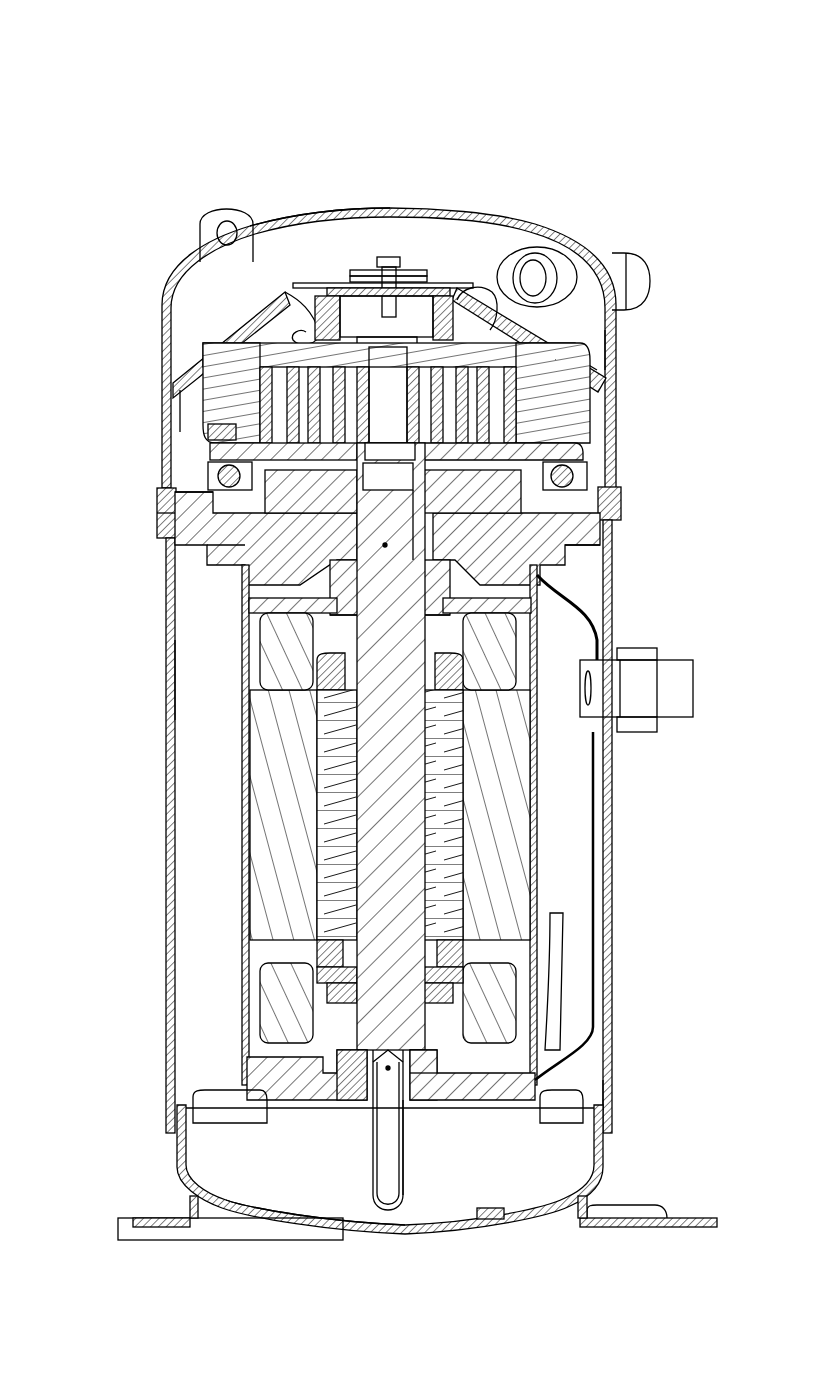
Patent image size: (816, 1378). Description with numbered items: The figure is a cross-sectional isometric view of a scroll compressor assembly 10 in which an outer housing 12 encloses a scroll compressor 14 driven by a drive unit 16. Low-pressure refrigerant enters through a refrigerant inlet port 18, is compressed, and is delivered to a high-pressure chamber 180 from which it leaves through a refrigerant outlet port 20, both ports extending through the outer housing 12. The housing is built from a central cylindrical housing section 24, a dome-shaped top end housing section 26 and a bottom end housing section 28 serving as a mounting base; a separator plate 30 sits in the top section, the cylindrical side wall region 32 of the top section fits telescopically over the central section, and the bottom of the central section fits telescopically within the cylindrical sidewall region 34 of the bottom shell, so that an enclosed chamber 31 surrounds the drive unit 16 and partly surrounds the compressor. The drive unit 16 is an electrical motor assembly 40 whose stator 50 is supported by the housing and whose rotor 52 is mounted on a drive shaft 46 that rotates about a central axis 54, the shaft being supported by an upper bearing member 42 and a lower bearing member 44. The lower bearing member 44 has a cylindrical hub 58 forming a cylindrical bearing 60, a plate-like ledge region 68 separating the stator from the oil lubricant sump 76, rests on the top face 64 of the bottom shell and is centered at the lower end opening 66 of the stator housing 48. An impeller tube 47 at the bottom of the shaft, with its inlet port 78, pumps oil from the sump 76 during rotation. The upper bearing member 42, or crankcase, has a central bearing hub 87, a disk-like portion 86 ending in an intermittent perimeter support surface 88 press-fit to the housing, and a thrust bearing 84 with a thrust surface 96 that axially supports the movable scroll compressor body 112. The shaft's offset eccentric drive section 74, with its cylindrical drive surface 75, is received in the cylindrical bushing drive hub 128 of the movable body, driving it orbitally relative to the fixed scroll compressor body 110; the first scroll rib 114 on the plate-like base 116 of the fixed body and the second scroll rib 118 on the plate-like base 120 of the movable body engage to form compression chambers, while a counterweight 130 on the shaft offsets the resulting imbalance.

The scroll compressor assembly 10 is at (660, 95).
The outer housing 12 is at (607, 608).
The scroll compressor 14 is at (178, 452).
The drive unit 16 is at (250, 967).
The refrigerant inlet port 18 is at (700, 695).
The refrigerant outlet port 20 is at (642, 253).
The central cylindrical housing section 24 is at (608, 938).
The top end housing section 26 is at (600, 362).
The bottom end housing section 28 is at (603, 1165).
The separator plate 30 is at (178, 345).
The enclosed chamber 31 is at (200, 675).
The cylindrical side wall region 32 is at (623, 503).
The cylindrical sidewall region 34 is at (178, 1163).
The electrical motor assembly 40 is at (258, 822).
The upper bearing member 42 is at (300, 565).
The lower bearing member 44 is at (577, 1087).
The drive shaft 46 is at (413, 803).
The impeller tube 47 is at (405, 1167).
The stator housing 48 is at (300, 714).
The stator 50 is at (575, 660).
The rotor 52 is at (333, 801).
The central axis 54 is at (388, 298).
The cylindrical hub 58 is at (337, 1073).
The cylindrical bearing 60 is at (443, 1088).
The top face 64 is at (607, 1097).
The lower end opening 66 is at (215, 1065).
The plate-like ledge region 68 is at (473, 1078).
The offset eccentric drive section 74 is at (580, 452).
The cylindrical drive surface 75 is at (590, 477).
The oil lubricant sump 76 is at (273, 1205).
The inlet port 78 is at (387, 1210).
The thrust bearing 84 is at (573, 463).
The disk-like portion 86 is at (310, 600).
The central bearing hub 87 is at (315, 612).
The intermittent perimeter support surface 88 is at (195, 500).
The thrust surface 96 is at (176, 513).
The fixed scroll compressor body 110 is at (618, 335).
The movable scroll compressor body 112 is at (222, 432).
The first scroll rib 114 is at (555, 395).
The plate-like base 116 is at (483, 368).
The second scroll rib 118 is at (203, 400).
The plate-like base 120 is at (225, 542).
The cylindrical bushing drive hub 128 is at (620, 533).
The counterweight 130 is at (243, 585).
The high-pressure chamber 180 is at (320, 240).